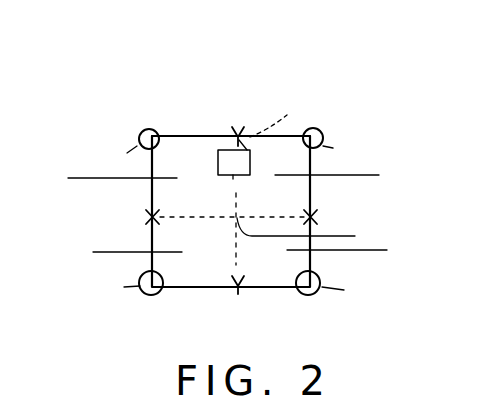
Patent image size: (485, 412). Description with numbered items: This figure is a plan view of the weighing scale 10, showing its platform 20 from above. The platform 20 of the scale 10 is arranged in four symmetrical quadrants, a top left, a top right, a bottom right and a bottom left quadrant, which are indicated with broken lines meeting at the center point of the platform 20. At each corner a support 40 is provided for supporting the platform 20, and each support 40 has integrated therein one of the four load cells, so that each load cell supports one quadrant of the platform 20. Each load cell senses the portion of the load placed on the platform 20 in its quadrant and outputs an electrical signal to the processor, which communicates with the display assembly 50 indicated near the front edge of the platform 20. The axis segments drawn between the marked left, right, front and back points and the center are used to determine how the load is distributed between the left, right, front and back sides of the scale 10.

The weighing scale 10 is at (143, 102).
The platform 20 is at (290, 135).
The supports 40 is at (137, 138).
The display assembly 50 is at (290, 135).